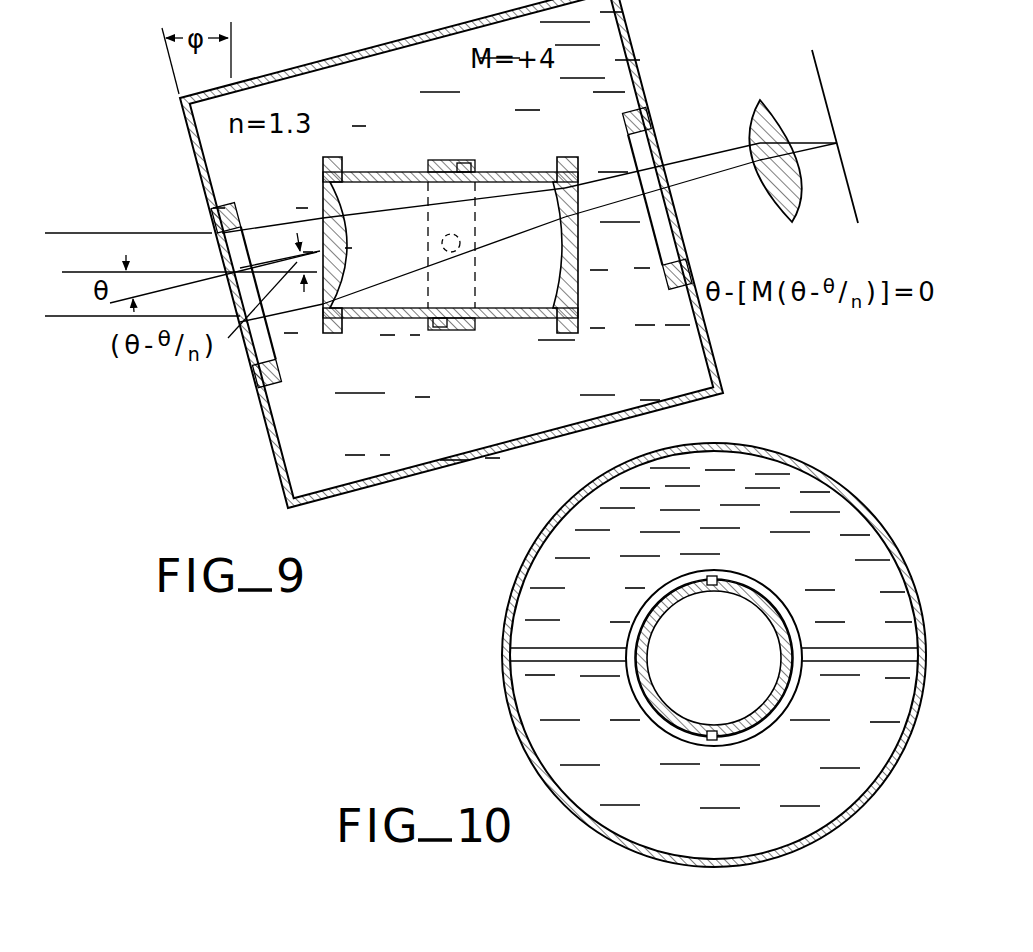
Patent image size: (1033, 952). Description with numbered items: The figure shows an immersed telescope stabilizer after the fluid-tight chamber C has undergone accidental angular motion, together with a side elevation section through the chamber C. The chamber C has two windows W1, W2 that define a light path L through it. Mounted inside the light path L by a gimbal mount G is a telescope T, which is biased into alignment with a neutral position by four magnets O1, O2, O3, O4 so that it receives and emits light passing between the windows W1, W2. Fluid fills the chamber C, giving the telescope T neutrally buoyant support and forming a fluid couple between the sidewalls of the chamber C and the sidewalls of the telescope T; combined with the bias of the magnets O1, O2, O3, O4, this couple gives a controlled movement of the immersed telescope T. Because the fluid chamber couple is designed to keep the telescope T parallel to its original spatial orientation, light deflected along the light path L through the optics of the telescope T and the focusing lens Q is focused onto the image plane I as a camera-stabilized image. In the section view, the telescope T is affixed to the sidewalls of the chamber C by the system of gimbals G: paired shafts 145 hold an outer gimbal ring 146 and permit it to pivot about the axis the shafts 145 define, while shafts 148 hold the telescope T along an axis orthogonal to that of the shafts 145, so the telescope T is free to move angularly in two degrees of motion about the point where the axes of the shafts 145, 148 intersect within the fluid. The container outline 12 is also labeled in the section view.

In FIG. 10, the cylindrical container 12 is at (861, 511).
In FIG. 10, the paired shafts 145 is at (574, 647).
In FIG. 9, the outer gimbal ring 146 is at (466, 164).
In FIG. 10, the outer gimbal ring 146 is at (773, 596).
In FIG. 9, the shafts 148 is at (443, 163).
In FIG. 10, the shafts 148 is at (706, 586).
In FIG. 9, the fluid-tight chamber C is at (642, 57).
In FIG. 10, the fluid-tight chamber C is at (508, 608).
In FIG. 9, the telescope T is at (514, 172).
In FIG. 9, the gimbal mount G is at (437, 330).
In FIG. 9, the light path L is at (147, 230).
In FIG. 9, the focusing lens Q is at (766, 104).
In FIG. 9, the image plane I is at (826, 89).
In FIG. 9, the window W1 is at (250, 350).
In FIG. 9, the window W2 is at (688, 234).
In FIG. 9, the magnet O1 is at (231, 211).
In FIG. 9, the magnet O2 is at (330, 158).
In FIG. 9, the magnet O3 is at (578, 158).
In FIG. 9, the magnet O4 is at (628, 110).